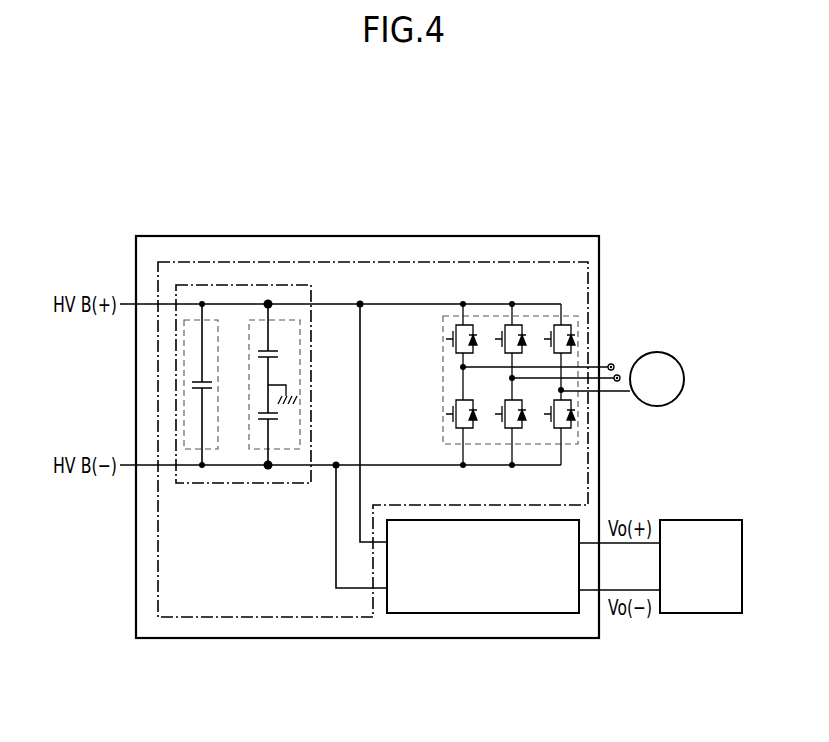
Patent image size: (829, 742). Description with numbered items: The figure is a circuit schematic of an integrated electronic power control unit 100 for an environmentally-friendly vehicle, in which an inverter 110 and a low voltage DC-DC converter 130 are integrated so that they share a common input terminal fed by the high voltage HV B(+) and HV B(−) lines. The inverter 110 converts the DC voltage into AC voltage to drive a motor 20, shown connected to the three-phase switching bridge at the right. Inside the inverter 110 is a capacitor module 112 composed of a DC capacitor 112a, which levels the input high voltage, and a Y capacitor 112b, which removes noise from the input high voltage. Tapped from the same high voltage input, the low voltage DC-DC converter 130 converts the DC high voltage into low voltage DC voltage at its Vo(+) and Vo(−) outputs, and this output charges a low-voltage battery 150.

The integrated electronic power control unit 100 is at (548, 234).
The inverter 110 is at (590, 278).
The capacitor module 112 is at (185, 285).
The DC capacitor 112a is at (213, 318).
The Y capacitor 112b is at (283, 318).
The motor 20 is at (654, 352).
The low voltage DC-DC converter 130 is at (489, 618).
The low-voltage battery 150 is at (700, 520).